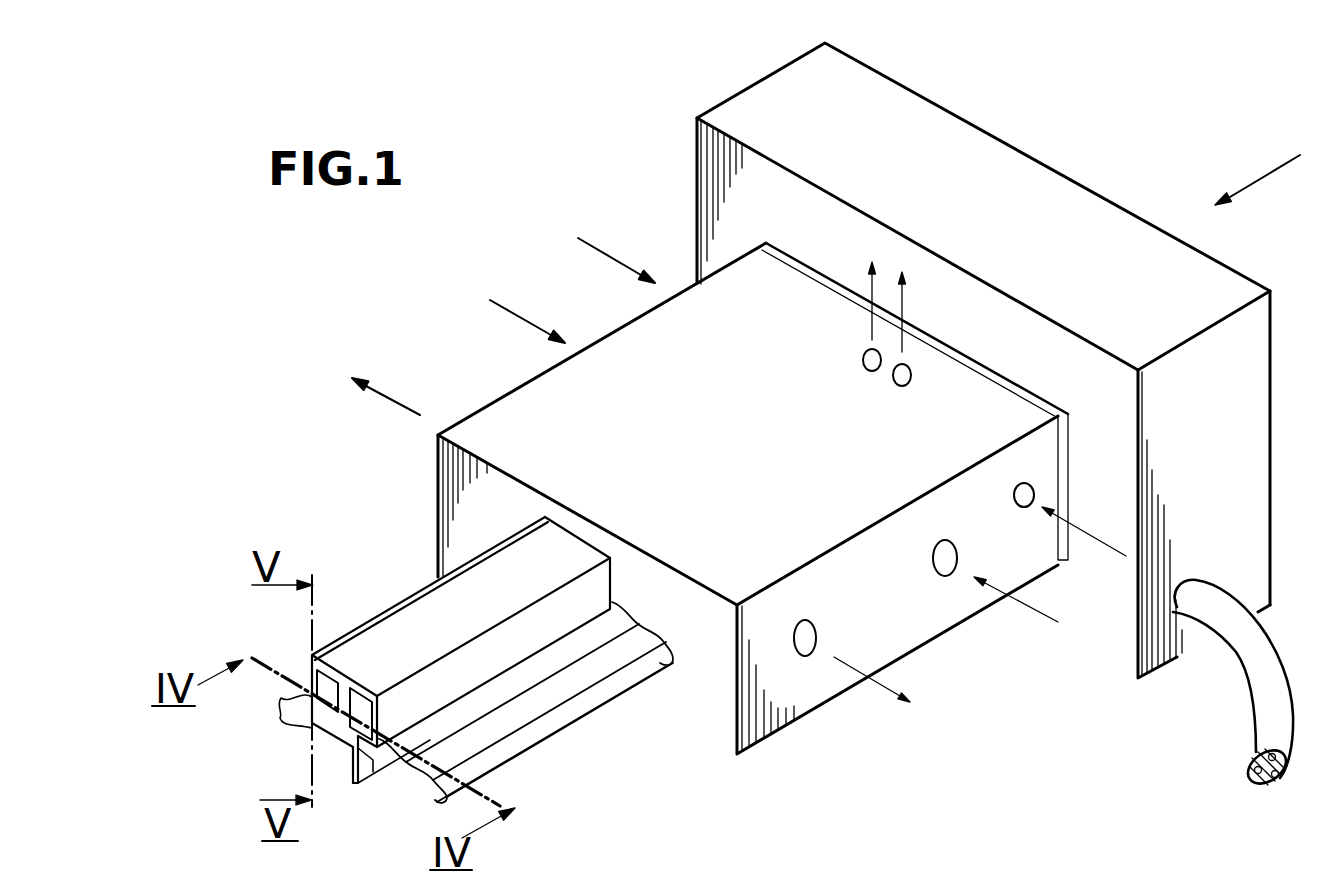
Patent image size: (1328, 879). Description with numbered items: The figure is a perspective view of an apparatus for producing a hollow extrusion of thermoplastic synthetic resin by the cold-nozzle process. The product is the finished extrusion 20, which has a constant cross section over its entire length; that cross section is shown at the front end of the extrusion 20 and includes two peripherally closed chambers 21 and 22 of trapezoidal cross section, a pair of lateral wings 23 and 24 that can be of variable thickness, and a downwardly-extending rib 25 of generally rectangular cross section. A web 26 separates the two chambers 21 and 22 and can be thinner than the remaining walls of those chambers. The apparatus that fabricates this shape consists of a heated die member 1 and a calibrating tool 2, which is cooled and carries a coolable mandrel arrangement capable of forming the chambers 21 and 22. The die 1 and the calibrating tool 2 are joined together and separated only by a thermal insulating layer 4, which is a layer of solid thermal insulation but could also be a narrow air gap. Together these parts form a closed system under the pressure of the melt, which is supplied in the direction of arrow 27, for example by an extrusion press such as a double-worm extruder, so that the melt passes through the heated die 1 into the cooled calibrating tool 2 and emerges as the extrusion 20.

The heated die member 1 is at (1059, 146).
The calibrating tool 2 is at (813, 694).
The thermal insulating layer 4 is at (1065, 581).
The finished extrusion 20 is at (412, 577).
The chamber 21 is at (325, 680).
The chamber 22 is at (353, 743).
The lateral wing 23 is at (277, 718).
The lateral wing 24 is at (540, 743).
The downwardly-extending rib 25 is at (373, 767).
The web 26 is at (368, 703).
The arrow (melt supply direction) 27 is at (1252, 178).